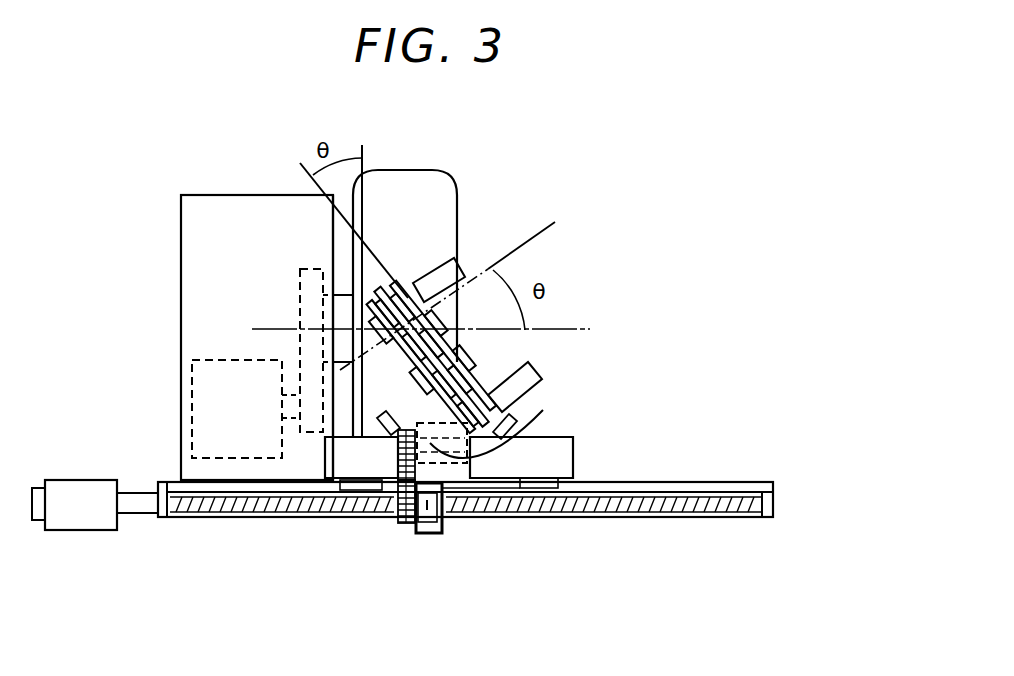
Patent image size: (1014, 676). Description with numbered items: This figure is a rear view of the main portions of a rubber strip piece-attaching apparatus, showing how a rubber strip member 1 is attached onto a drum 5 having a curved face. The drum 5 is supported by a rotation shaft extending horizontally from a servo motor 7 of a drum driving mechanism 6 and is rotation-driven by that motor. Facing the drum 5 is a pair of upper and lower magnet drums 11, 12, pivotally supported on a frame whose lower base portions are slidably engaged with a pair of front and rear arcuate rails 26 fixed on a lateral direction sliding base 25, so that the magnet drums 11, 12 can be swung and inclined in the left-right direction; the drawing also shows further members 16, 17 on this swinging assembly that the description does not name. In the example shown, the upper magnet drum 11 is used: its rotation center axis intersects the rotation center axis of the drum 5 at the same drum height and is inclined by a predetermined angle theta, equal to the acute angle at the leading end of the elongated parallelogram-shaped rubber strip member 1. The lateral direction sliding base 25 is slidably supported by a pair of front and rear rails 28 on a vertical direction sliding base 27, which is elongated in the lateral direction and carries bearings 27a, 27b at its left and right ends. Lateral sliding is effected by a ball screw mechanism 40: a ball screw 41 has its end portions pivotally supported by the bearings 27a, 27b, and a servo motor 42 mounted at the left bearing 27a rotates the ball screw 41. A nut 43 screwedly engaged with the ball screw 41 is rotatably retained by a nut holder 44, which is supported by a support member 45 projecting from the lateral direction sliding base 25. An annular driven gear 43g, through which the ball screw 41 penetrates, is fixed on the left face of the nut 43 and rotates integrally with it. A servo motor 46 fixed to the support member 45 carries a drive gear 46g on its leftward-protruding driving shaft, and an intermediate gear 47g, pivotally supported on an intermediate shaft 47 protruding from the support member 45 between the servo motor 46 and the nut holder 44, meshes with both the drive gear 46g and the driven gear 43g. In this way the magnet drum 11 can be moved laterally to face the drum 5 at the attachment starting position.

The rubber strip member 1 is at (438, 293).
The drum having a curved face 5 is at (435, 187).
The drum driving mechanism 6 is at (228, 196).
The servo motor 7 is at (222, 360).
The upper magnet drum 11 is at (403, 360).
The lower magnet drum 12 is at (461, 370).
The light emitter 16 is at (438, 262).
The light receiver 17 is at (512, 364).
The lateral direction sliding base 25 is at (575, 437).
The arcuate rails 26 is at (538, 412).
The vertical direction sliding base 27 is at (518, 518).
The bearing 27a is at (163, 518).
The bearing 27b is at (770, 518).
The rails 28 is at (627, 482).
The ball screw mechanism 40 is at (415, 526).
The ball screw 41 is at (591, 510).
The servo motor 42 is at (80, 532).
The nut 43 is at (423, 532).
The driven gear 43g is at (407, 525).
The nut holder 44 is at (432, 533).
The support member 45 is at (460, 500).
The servo motor 46 is at (520, 438).
The drive gear 46g is at (398, 452).
The intermediate shaft 47 is at (397, 510).
The intermediate gear 47g is at (398, 500).